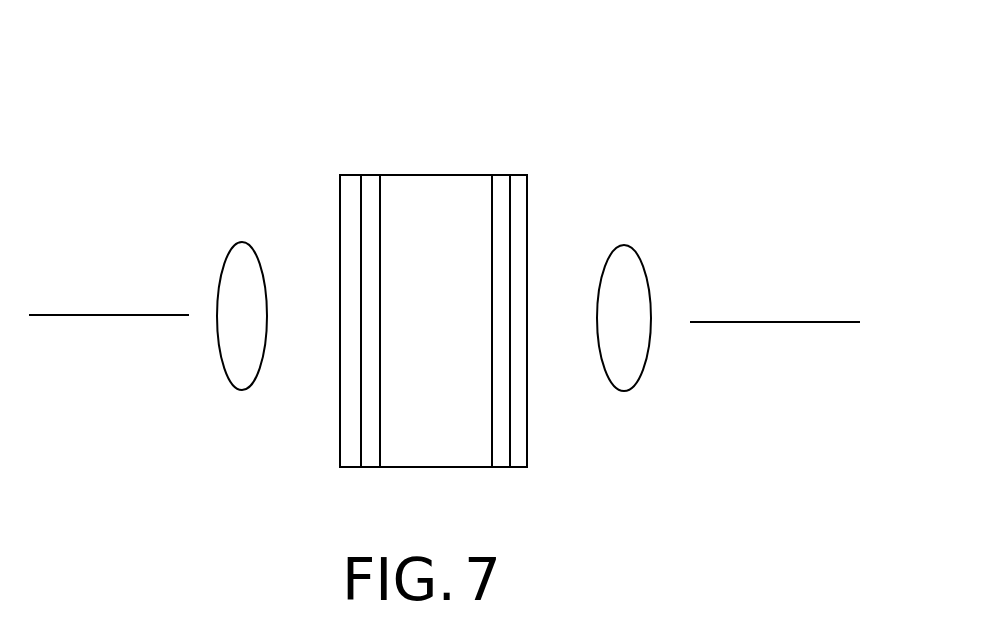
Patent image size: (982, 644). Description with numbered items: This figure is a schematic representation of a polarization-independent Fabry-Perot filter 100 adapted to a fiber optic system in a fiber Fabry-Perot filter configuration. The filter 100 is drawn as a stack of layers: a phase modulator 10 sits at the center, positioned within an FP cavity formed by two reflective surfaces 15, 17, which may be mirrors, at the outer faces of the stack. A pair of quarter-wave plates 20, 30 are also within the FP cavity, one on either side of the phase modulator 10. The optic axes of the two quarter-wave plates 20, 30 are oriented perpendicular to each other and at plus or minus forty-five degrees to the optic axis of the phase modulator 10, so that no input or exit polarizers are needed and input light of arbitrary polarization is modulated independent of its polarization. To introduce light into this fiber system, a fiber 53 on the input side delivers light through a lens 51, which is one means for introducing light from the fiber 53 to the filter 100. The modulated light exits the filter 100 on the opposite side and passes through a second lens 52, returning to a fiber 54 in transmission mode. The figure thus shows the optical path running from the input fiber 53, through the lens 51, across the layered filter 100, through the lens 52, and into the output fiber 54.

The polarization-independent FP filter 100 is at (466, 64).
The reflective surface 15 is at (352, 174).
The quarter-wave plate 20 is at (370, 174).
The phase modulator 10 is at (437, 174).
The quarter-wave plate 30 is at (500, 174).
The reflective surface 17 is at (520, 174).
The lens 51 is at (230, 243).
The lens 52 is at (623, 247).
The fiber 53 is at (115, 317).
The fiber 54 is at (780, 323).